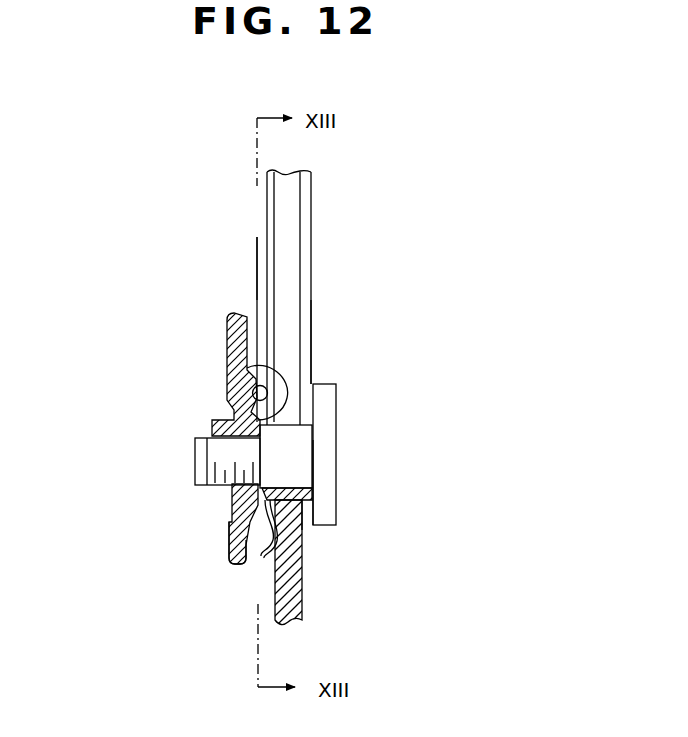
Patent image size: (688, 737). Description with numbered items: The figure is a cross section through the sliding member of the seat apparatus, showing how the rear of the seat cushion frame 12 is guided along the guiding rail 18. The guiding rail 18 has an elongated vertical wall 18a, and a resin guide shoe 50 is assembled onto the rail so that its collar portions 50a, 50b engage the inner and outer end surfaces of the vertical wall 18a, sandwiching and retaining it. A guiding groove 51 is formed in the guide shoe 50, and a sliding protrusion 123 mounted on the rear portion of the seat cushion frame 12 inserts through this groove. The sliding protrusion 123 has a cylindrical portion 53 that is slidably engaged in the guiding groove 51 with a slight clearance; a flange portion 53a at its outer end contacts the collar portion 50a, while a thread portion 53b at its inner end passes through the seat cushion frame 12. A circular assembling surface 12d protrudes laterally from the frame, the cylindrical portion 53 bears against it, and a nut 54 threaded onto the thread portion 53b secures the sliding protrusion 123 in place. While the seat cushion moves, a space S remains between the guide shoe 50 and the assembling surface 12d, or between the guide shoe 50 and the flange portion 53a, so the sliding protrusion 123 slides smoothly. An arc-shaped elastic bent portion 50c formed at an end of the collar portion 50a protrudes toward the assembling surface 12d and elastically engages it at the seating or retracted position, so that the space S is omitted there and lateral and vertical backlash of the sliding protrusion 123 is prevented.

The seat cushion frame 12 is at (211, 560).
The assembling surface 12d is at (250, 368).
The guiding rail 18 is at (308, 593).
The vertical wall 18a is at (305, 553).
The guide shoe 50 is at (259, 566).
The collar portion 50a is at (267, 292).
The collar portion 50b is at (320, 304).
The elastic bent portion 50c is at (228, 522).
The guiding groove 51 is at (295, 218).
The cylindrical portion 53 is at (290, 438).
The flange portion 53a is at (332, 468).
The thread portion 53b is at (197, 453).
The nut 54 is at (231, 488).
The sliding protrusion 123 is at (341, 440).
The space S is at (297, 254).